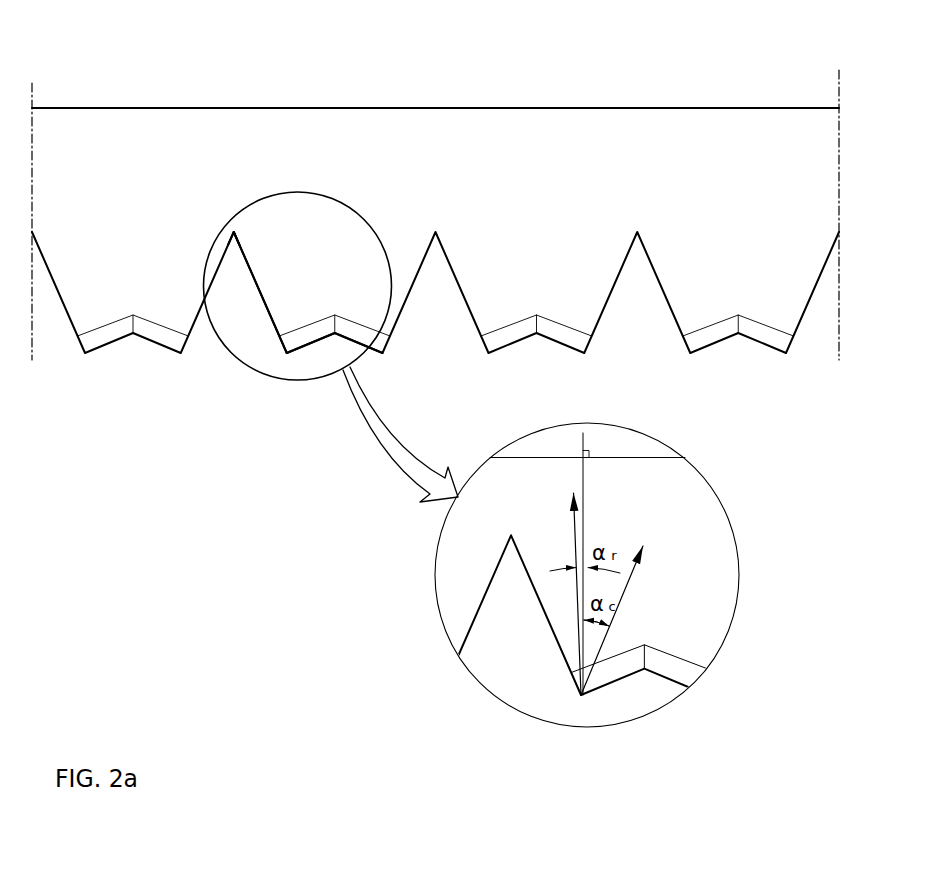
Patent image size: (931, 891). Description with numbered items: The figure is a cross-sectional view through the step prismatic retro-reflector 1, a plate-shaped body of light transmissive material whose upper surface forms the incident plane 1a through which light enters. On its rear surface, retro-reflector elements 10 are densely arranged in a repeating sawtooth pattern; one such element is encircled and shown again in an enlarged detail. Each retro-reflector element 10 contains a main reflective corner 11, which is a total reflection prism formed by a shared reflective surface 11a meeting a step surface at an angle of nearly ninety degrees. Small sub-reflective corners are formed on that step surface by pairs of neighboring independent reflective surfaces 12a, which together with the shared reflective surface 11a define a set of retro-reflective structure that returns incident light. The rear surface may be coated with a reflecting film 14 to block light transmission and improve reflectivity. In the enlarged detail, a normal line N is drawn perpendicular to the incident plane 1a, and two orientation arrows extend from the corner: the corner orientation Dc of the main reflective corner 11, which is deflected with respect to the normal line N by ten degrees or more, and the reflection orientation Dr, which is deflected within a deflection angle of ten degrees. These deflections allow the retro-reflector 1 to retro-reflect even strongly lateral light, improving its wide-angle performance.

The step prismatic retro-reflector 1 is at (247, 107).
The incident plane 1a is at (618, 457).
The retro-reflector element 10 is at (338, 248).
The main reflective corner 11 is at (200, 370).
The shared reflective surface 11a is at (281, 320).
The independent reflective surface 12a is at (317, 333).
The reflecting film 14 is at (247, 261).
The normal line N is at (581, 443).
The reflection orientation Dr is at (571, 581).
The corner orientation Dc is at (621, 606).